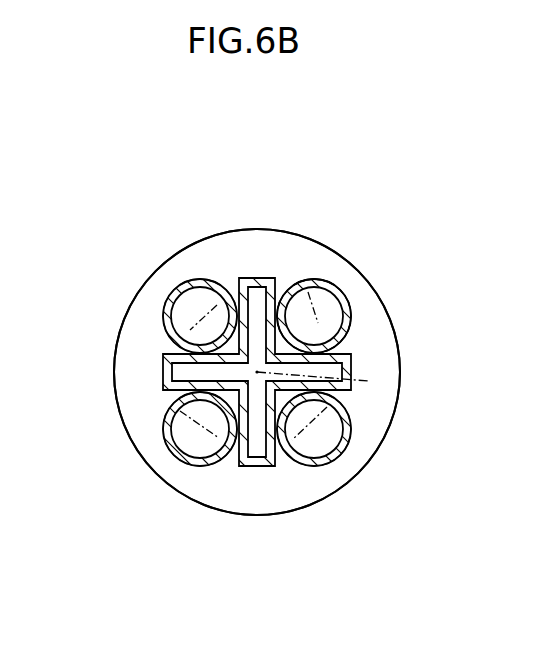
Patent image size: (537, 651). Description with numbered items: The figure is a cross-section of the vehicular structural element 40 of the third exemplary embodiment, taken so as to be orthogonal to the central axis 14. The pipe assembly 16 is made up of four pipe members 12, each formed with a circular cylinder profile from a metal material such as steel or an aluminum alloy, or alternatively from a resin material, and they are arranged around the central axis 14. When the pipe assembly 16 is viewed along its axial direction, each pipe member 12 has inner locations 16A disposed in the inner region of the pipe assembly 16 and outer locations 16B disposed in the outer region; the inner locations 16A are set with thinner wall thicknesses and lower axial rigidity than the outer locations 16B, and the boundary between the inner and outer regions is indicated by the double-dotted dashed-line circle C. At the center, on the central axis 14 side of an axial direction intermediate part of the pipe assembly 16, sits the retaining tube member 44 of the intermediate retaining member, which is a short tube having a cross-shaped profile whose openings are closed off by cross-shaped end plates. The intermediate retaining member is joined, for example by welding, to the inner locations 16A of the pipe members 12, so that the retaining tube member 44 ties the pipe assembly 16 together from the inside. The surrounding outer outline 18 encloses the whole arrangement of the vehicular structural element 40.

The sheath 18 is at (225, 226).
The vehicular structural element 40 is at (460, 259).
The retaining tube member 44 is at (251, 274).
The outer locations 16B is at (205, 283).
The inner locations 16A is at (227, 334).
The pipe member 12 is at (176, 278).
The pipe assembly 16 is at (356, 285).
The central axis 14 is at (368, 381).
The double-dotted dashed-line circle C is at (335, 425).